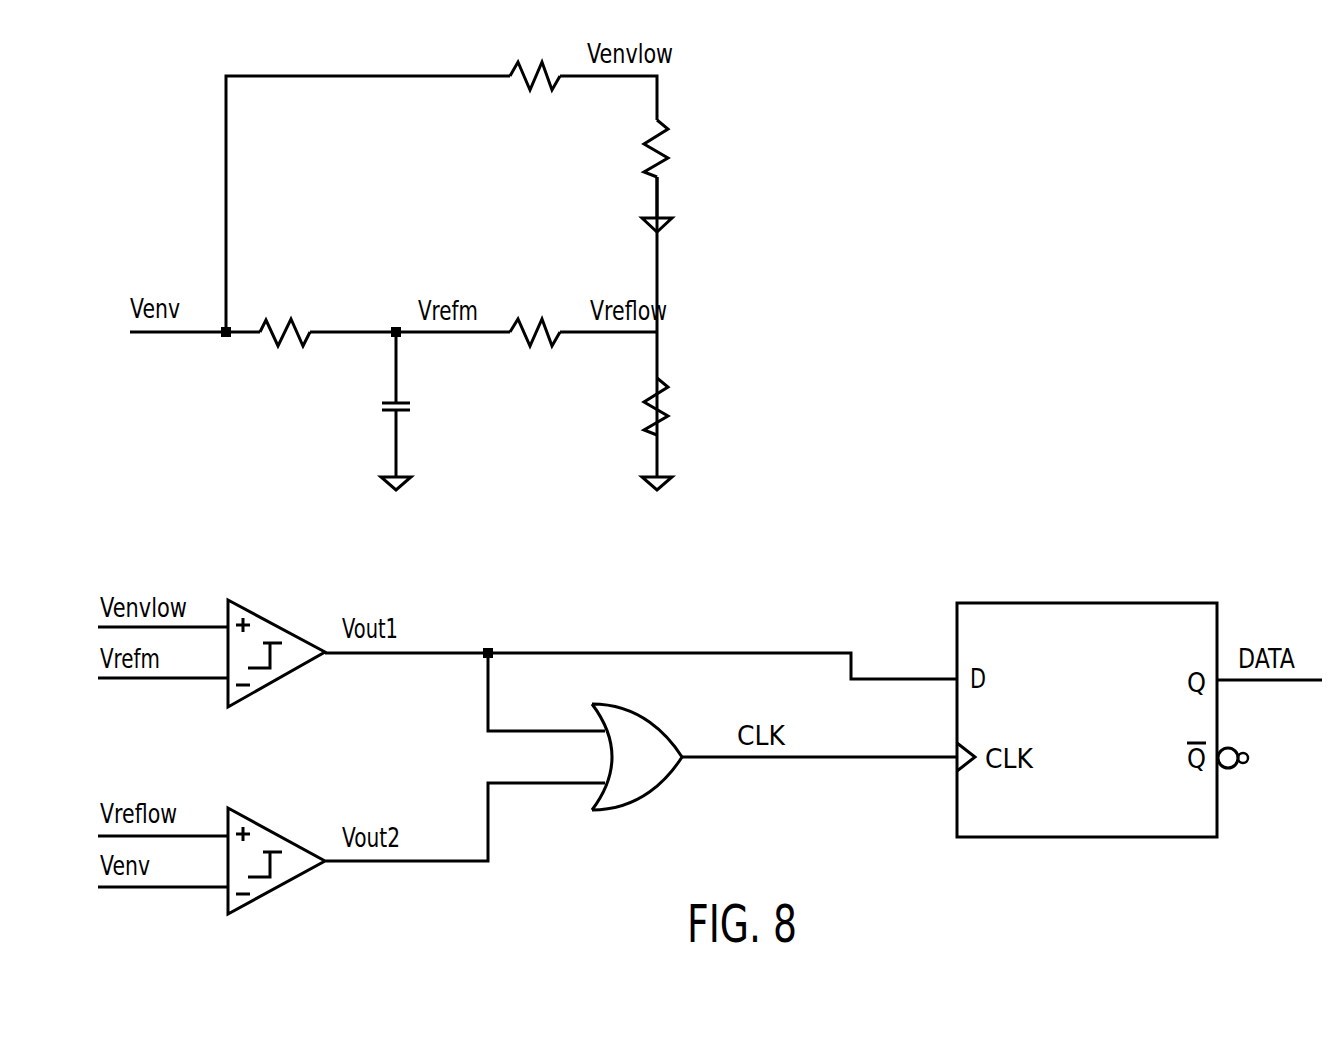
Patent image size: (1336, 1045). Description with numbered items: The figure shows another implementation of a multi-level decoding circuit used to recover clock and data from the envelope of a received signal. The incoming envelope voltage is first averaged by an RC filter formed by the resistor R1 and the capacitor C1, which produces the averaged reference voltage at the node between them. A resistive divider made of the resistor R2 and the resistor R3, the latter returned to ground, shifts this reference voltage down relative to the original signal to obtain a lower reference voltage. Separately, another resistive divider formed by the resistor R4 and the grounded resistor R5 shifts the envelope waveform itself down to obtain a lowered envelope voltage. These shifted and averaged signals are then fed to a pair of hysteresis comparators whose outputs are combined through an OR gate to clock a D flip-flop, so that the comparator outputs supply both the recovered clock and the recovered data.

The resistor R1 is at (285, 336).
The resistor R2 is at (535, 335).
The resistor R3 is at (674, 410).
The resistor R4 is at (535, 77).
The resistor R5 is at (674, 152).
The capacitor C1 is at (407, 408).